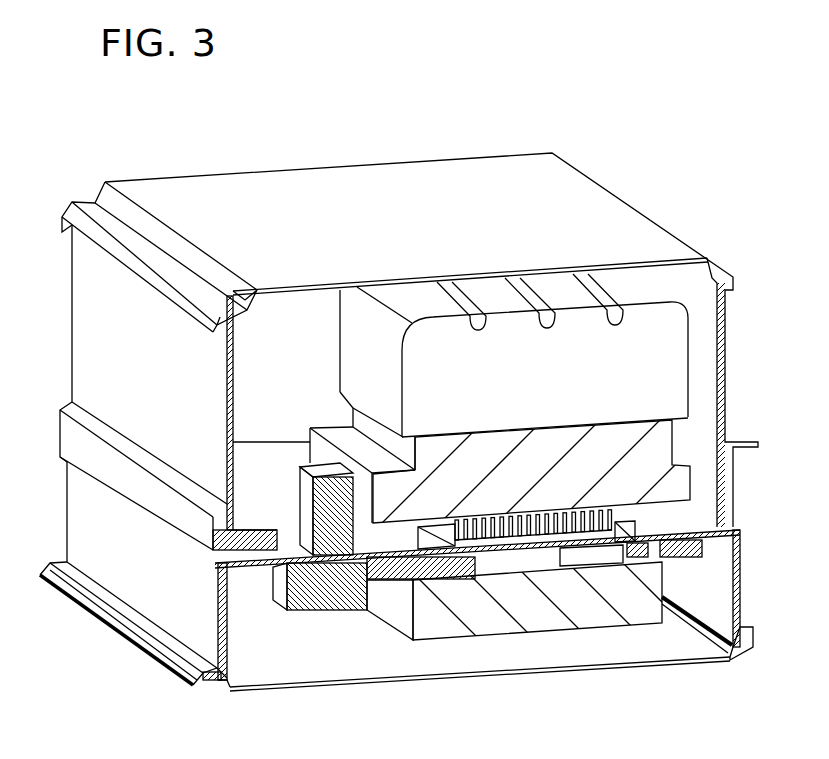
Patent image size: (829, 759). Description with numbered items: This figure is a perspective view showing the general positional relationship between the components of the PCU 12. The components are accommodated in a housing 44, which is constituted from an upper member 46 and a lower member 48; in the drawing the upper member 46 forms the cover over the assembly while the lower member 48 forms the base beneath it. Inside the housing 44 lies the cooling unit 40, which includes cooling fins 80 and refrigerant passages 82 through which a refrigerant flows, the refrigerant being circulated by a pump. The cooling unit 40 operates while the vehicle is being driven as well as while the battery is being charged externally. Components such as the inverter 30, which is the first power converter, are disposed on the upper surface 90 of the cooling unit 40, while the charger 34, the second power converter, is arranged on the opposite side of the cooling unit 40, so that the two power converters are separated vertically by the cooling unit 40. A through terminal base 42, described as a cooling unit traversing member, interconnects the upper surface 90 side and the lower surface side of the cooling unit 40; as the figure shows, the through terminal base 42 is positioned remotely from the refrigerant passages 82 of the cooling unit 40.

The PCU 12 is at (314, 135).
The inverter 30 is at (670, 445).
The charger 34 is at (477, 640).
The cooling unit 40 is at (657, 502).
The through terminal base 42 is at (333, 610).
The housing 44 is at (72, 326).
The upper member 46 is at (72, 279).
The lower member 48 is at (67, 507).
The cooling fins 80 is at (620, 527).
The refrigerant passages 82 is at (542, 512).
The upper surface 90 is at (250, 462).